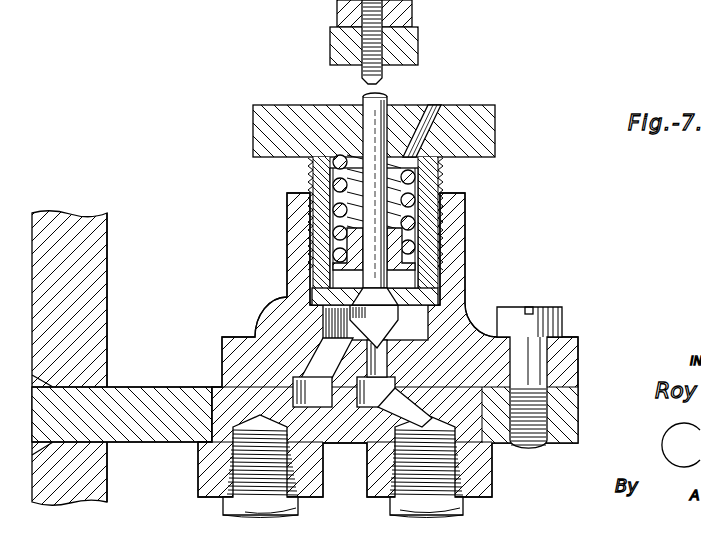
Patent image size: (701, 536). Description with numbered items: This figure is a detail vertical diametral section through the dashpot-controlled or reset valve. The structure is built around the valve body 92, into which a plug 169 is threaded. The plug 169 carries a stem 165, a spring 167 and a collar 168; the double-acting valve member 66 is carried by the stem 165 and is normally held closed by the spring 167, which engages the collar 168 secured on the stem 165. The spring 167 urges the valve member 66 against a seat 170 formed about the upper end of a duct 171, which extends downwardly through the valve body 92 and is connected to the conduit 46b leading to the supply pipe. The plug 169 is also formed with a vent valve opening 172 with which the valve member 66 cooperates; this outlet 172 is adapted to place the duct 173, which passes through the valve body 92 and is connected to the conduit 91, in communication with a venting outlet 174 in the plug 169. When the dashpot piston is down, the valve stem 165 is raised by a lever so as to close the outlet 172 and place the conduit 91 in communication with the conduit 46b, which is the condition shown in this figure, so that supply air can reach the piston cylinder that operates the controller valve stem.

The reset air valve 92 is at (278, 318).
The conduit 91 is at (233, 500).
The conduit 46b is at (462, 505).
The seat 170 is at (467, 327).
The duct 173 is at (300, 386).
The duct 171 is at (382, 367).
The valve disc 66 is at (390, 333).
The plug 169 is at (288, 115).
The venting outlet 174 is at (432, 108).
The vent valve opening 172 is at (332, 287).
The spring 167 is at (414, 200).
The collar 168 is at (417, 277).
The stem 165 is at (385, 76).